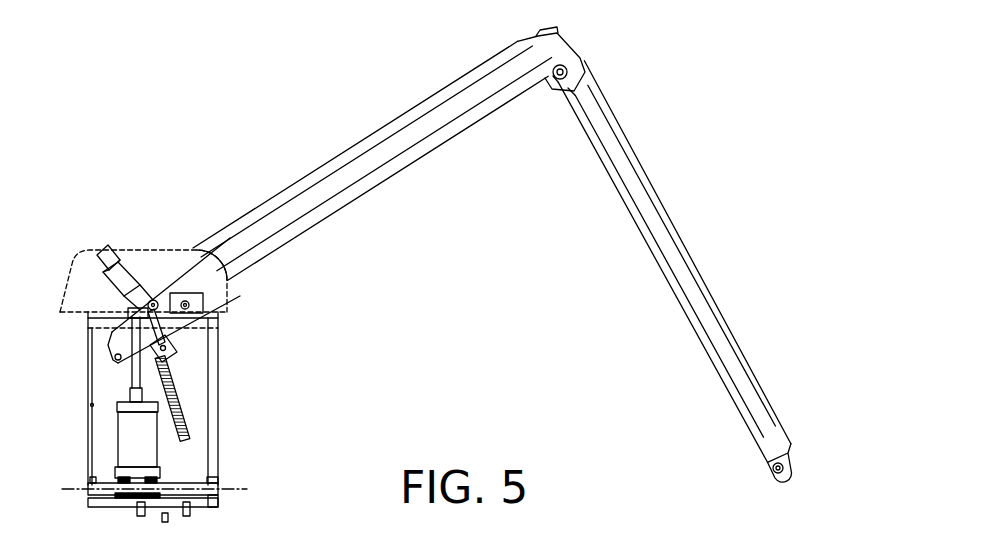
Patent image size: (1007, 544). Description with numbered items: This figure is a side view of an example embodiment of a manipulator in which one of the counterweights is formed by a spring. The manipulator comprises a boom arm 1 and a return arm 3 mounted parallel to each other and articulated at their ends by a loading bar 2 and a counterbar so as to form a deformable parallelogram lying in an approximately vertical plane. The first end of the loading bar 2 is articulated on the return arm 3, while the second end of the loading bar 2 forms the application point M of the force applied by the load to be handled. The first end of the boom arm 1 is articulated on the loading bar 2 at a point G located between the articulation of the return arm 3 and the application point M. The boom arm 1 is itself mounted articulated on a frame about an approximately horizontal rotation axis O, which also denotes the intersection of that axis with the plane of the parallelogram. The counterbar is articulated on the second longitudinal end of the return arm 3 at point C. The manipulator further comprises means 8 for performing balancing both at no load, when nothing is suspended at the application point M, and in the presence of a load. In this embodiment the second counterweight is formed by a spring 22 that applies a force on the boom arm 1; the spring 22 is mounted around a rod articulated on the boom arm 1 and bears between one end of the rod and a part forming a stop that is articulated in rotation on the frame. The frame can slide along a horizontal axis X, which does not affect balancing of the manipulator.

The boom arm 1 is at (365, 193).
The loading bar 2 is at (645, 233).
The return arm 3 is at (172, 275).
The means for performing balancing 8 is at (158, 447).
The spring 22 is at (188, 413).
The point C is at (152, 300).
The point G is at (552, 86).
The rotation axis O is at (190, 305).
The application point M is at (772, 470).
The horizontal axis X is at (80, 488).